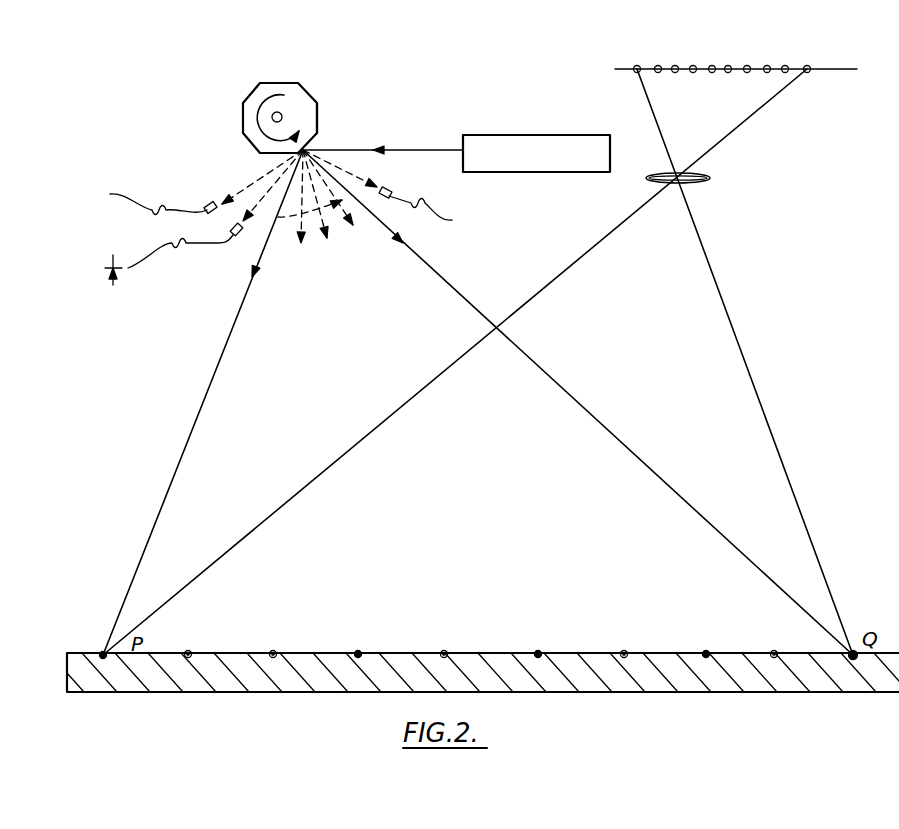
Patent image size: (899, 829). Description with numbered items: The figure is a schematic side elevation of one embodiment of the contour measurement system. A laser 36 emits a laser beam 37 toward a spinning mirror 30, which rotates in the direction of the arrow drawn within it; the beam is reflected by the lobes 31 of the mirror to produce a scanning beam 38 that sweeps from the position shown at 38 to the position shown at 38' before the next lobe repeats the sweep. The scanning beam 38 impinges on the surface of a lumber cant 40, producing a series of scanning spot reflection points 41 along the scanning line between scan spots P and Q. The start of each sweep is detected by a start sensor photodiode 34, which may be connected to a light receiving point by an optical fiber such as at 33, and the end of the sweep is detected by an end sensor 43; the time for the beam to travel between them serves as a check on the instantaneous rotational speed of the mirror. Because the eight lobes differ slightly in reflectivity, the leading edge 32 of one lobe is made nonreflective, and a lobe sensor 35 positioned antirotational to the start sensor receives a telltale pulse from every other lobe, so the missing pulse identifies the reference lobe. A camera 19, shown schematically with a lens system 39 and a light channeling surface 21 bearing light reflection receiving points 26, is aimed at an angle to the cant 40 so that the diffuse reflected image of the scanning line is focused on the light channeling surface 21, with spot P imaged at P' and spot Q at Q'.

The camera 19 is at (491, 343).
The light channeling surface 21 is at (747, 52).
The light reflection receiving points 26 is at (659, 66).
The spinning mirror 30 is at (293, 96).
The lobes 31 is at (276, 83).
The leading edge 32 is at (317, 105).
The optical fiber 33 is at (237, 233).
The start sensor photodiode 34 is at (115, 280).
The lobe sensor 35 is at (211, 204).
The laser 36 is at (510, 135).
The laser beam 37 is at (403, 150).
The scanning beam 38 is at (203, 402).
The scanning beam end position 38' is at (578, 402).
The lens system 39 is at (710, 180).
The lumber cant 40 is at (78, 653).
The scanning spot reflection points 41 is at (273, 652).
The end sensor 43 is at (388, 192).